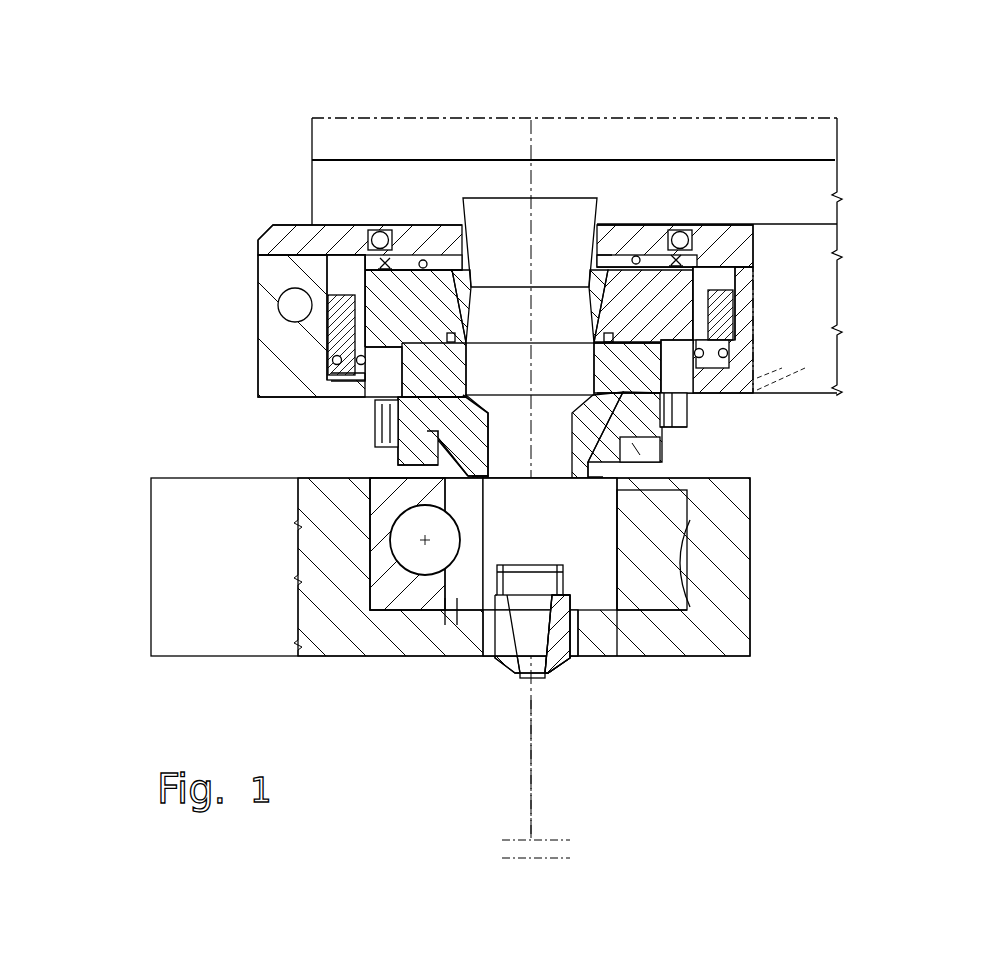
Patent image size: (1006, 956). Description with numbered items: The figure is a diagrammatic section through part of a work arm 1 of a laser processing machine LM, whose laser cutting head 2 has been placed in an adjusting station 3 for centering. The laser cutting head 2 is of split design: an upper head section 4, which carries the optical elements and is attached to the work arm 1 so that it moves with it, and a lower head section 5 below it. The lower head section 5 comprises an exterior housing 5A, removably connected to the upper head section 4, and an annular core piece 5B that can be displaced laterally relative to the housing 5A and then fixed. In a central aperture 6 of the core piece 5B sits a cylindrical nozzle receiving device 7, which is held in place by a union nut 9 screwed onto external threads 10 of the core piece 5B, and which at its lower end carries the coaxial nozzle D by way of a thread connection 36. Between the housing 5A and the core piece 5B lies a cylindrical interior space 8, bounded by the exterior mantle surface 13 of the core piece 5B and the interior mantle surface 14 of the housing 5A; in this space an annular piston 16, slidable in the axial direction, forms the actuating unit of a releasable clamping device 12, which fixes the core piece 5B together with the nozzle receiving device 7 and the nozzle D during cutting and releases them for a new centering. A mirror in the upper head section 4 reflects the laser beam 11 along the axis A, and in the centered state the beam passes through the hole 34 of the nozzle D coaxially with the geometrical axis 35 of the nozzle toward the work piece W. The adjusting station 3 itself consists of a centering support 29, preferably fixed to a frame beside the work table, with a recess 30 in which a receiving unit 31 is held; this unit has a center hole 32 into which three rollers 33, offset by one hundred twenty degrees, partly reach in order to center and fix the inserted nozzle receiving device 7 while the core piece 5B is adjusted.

The work arm 1 is at (665, 108).
The laser processing machine LM is at (220, 150).
The laser cutting head 2 is at (843, 196).
The adjusting station 3 is at (494, 580).
The upper head section 4 is at (544, 300).
The lower head section 5 is at (210, 338).
The exterior housing 5A is at (278, 333).
The core piece 5B is at (650, 283).
The central aperture 6 is at (628, 413).
The nozzle receiving device 7 is at (445, 421).
The cylindrical interior space 8 is at (362, 330).
The union nut 9 is at (684, 432).
The external threads 10 is at (674, 412).
The laser beam 11 is at (532, 713).
The releasable clamping device 12 is at (755, 337).
The exterior mantle surface 13 is at (365, 286).
The interior mantle surface 14 is at (334, 376).
The annular piston 16 is at (713, 318).
The centering support 29 is at (735, 630).
The recess 30 is at (380, 577).
The receiving unit 31 is at (657, 555).
The center hole 32 is at (448, 628).
The rollers 33 is at (425, 540).
The hole of the nozzle 34 is at (537, 678).
The geometrical axis of the nozzle 35 is at (535, 477).
The thread connection 36 is at (563, 593).
The axis A- A is at (551, 479).
The nozzle D is at (555, 643).
The work piece W is at (553, 848).